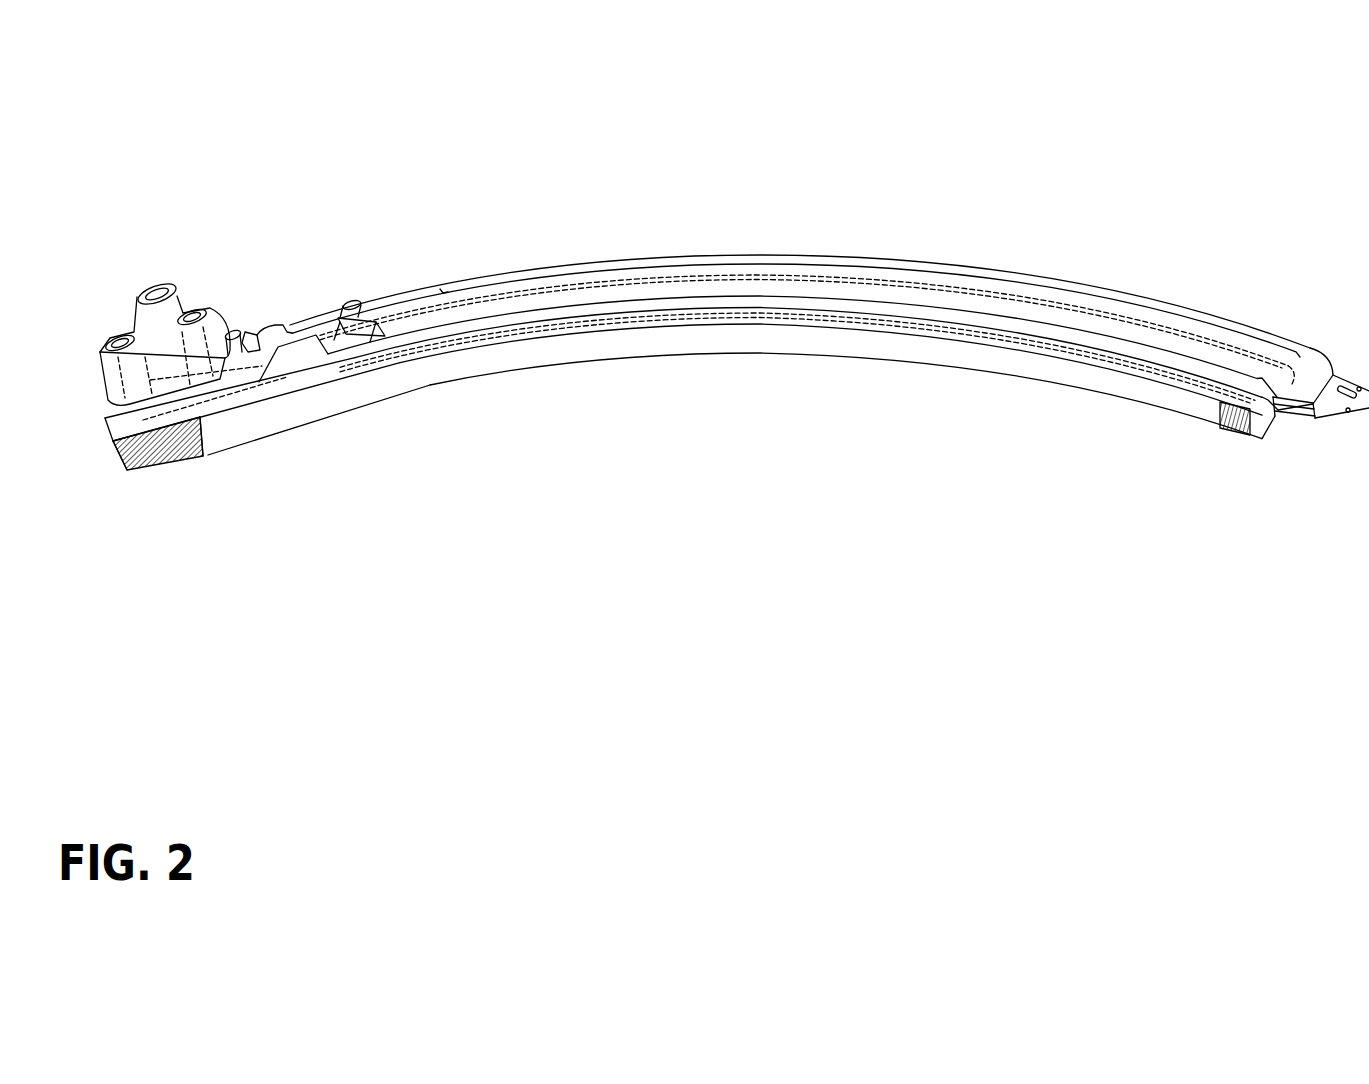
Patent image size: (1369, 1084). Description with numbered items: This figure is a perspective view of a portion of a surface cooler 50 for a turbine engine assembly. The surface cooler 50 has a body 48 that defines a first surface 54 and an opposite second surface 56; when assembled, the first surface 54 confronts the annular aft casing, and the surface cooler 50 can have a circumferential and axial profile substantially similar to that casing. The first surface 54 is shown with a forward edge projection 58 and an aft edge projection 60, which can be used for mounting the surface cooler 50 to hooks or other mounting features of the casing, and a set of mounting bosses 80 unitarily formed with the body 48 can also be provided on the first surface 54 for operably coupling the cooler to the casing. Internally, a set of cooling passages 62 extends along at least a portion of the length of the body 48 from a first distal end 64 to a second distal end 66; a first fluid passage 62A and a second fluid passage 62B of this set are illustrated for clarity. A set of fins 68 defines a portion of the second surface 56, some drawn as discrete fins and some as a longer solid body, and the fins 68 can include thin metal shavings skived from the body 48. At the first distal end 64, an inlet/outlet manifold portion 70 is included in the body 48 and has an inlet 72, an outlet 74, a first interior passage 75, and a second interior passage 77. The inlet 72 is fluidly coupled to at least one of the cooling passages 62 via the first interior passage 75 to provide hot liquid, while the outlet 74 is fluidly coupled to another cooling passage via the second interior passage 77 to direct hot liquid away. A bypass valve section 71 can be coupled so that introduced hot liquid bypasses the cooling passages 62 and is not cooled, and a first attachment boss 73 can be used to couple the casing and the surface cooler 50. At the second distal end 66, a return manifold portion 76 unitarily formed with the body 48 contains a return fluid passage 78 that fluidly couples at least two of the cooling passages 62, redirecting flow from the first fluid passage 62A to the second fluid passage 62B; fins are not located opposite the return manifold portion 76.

The body 48 is at (546, 262).
The surface cooler 50 is at (358, 192).
The first surface 54 is at (925, 293).
The second surface 56 is at (1258, 415).
The forward edge projection 58 is at (563, 312).
The aft edge projection 60 is at (690, 258).
The set of cooling passages 62 is at (817, 272).
The first fluid passage 62A is at (1195, 333).
The second fluid passage 62B is at (1083, 362).
The first distal end 64 is at (120, 458).
The second distal end 66 is at (1297, 428).
The set of fins 68 is at (1227, 432).
The inlet/outlet manifold portion 70 is at (199, 364).
The bypass valve section 71 is at (150, 284).
The inlet 72 is at (116, 336).
The first attachment boss 73 is at (236, 318).
The outlet 74 is at (192, 310).
The first interior passage 75 is at (110, 386).
The return manifold portion 76 is at (1318, 416).
The second interior passage 77 is at (219, 304).
The return fluid passage 78 is at (1290, 372).
The set of mounting bosses 80 is at (337, 307).